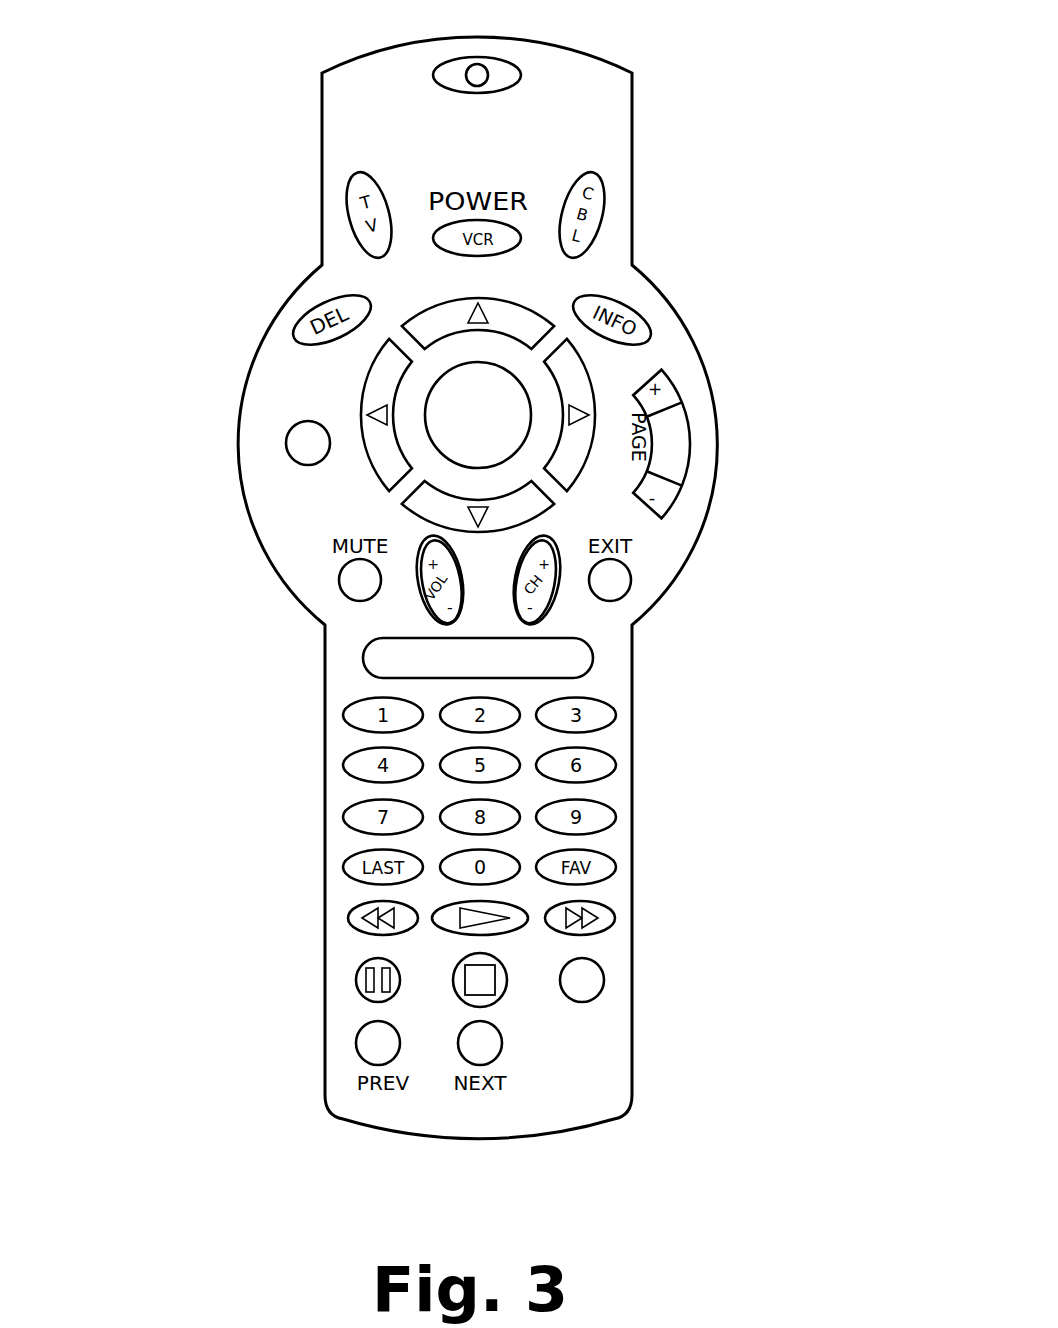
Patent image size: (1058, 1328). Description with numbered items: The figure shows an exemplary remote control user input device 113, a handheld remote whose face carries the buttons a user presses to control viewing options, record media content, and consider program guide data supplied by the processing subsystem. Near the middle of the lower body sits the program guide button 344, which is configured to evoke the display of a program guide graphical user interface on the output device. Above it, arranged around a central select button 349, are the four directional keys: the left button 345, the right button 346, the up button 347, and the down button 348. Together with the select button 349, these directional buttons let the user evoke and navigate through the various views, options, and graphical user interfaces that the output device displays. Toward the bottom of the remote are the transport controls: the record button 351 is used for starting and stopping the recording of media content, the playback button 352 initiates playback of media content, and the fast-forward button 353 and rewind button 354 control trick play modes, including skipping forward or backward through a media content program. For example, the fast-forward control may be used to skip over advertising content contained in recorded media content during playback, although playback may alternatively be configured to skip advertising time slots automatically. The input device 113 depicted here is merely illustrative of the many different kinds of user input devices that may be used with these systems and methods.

The remote control user input device 113 is at (630, 75).
The program guide button 344 is at (593, 665).
The left button 345 is at (360, 413).
The right button 346 is at (590, 370).
The up button 347 is at (427, 307).
The down button 348 is at (548, 490).
The select button 349 is at (425, 415).
The record button 351 is at (605, 983).
The playback button 352 is at (512, 932).
The fast-forward button 353 is at (616, 917).
The rewind button 354 is at (348, 918).